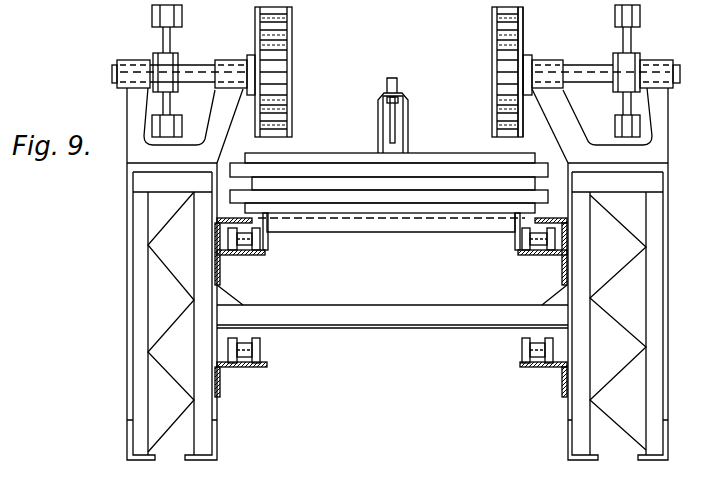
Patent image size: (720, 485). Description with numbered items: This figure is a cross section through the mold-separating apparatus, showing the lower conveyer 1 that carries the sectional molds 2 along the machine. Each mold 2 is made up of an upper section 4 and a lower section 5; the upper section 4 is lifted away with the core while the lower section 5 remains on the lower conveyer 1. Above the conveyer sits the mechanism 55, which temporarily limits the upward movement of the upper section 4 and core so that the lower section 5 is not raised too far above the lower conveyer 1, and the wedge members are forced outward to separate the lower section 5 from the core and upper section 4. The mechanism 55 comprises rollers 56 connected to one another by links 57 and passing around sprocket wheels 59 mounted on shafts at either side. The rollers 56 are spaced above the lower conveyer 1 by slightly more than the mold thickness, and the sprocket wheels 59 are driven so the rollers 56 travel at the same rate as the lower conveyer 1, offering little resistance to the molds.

The lower conveyer 1 is at (378, 227).
The sectional mold 2 is at (538, 183).
The upper section 4 is at (438, 155).
The lower section 5 is at (298, 193).
The mechanism 55 is at (245, 52).
The rollers 56 is at (278, 43).
The links 57 is at (525, 32).
The sprocket wheels 59 is at (273, 72).